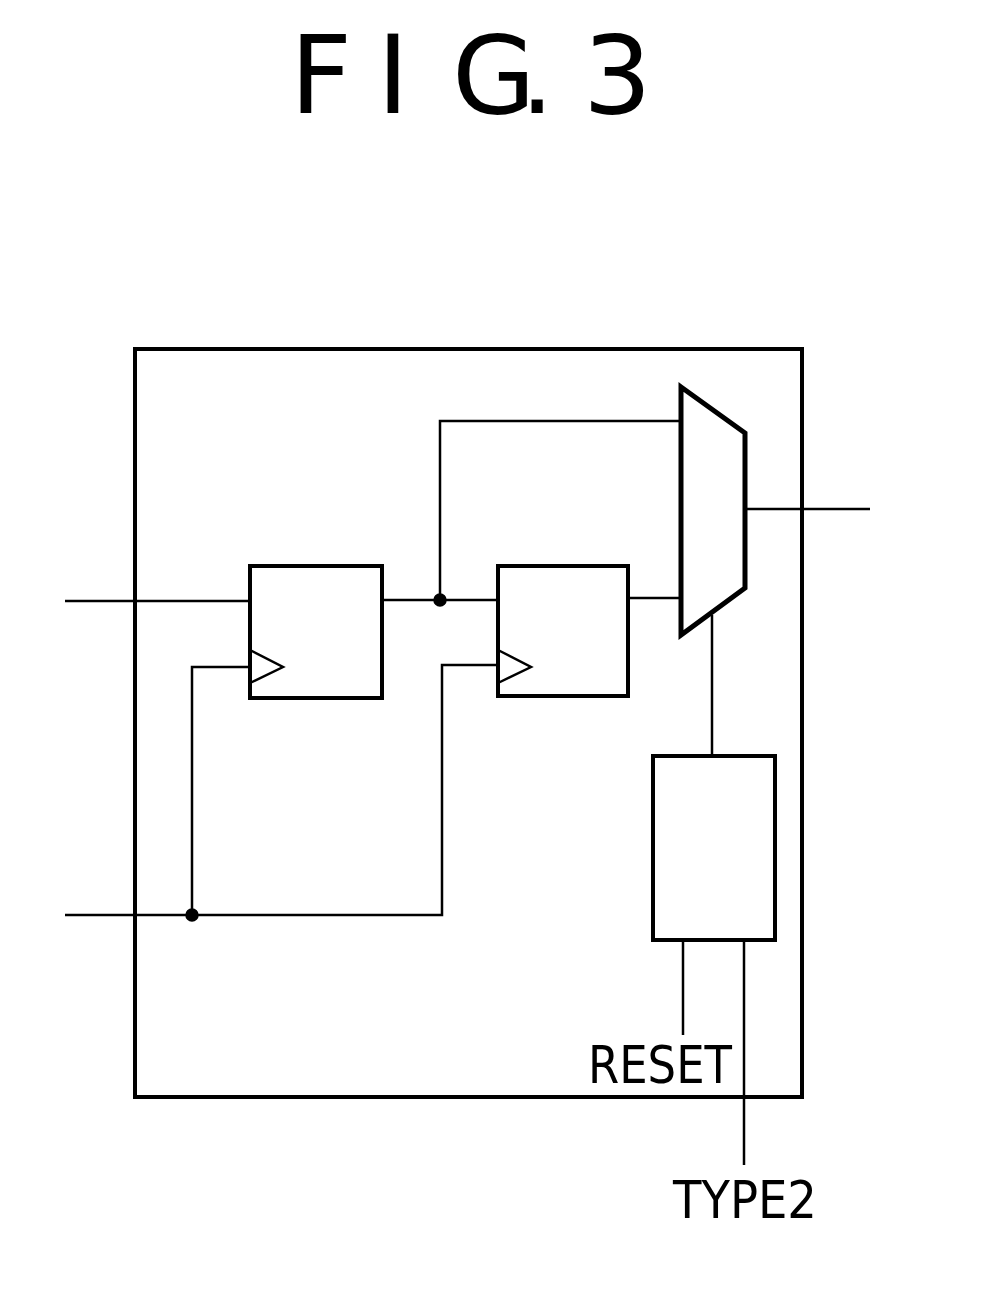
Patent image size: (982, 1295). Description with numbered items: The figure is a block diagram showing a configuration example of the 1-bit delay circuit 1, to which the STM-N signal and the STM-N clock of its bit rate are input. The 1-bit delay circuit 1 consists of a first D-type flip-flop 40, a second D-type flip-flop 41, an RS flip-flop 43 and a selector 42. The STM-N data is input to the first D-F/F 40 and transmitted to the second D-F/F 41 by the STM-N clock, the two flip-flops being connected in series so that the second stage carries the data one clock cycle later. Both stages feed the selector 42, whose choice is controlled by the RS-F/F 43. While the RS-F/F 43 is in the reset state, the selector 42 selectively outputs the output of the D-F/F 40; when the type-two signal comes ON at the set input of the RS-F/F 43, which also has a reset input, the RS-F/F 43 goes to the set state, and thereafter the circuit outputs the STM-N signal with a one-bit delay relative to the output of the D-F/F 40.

The 1-bit delay circuit 1 is at (803, 733).
The first D-type flip-flop 40 is at (334, 567).
The second D-type flip-flop 41 is at (566, 565).
The selector 42 is at (722, 415).
The RS flip-flop 43 is at (652, 850).